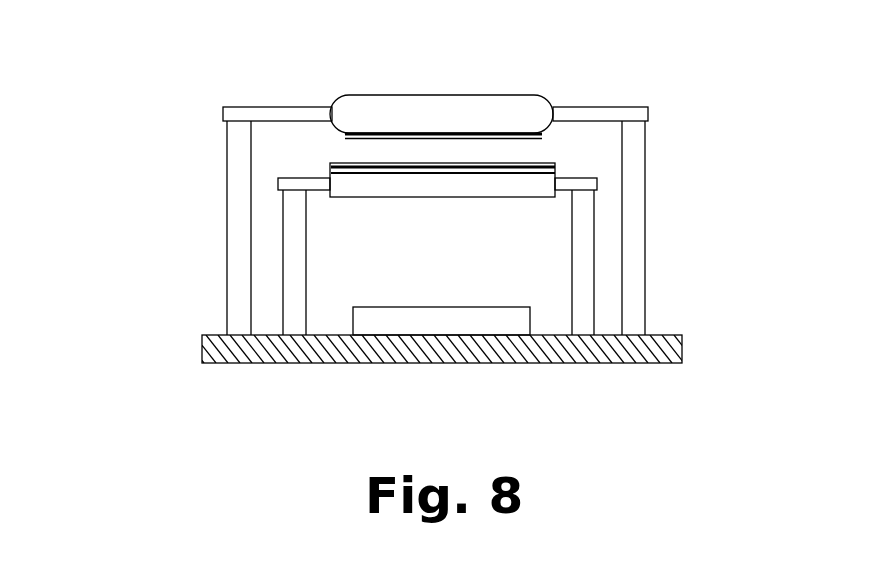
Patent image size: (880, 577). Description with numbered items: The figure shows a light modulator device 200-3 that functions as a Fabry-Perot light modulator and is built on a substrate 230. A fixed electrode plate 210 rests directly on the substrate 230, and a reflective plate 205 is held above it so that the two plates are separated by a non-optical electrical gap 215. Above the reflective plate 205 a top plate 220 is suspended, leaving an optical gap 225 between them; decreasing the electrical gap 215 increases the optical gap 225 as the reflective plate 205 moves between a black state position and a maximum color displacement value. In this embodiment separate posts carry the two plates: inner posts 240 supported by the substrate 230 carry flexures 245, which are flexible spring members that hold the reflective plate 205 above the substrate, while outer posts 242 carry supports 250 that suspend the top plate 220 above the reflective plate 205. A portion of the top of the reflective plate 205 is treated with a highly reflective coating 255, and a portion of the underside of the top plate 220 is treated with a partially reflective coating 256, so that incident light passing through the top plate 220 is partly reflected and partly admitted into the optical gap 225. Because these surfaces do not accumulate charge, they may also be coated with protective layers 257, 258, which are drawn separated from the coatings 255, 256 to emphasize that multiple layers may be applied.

The light modulator device 200-3 is at (162, 90).
The reflective plate 205 is at (463, 195).
The fixed electrode plate 210 is at (461, 333).
The electrical gap 215 is at (520, 270).
The top plate 220 is at (461, 124).
The optical gap 225 is at (547, 151).
The substrate 230 is at (435, 340).
The inner posts 240 is at (283, 288).
The outer posts 242 is at (228, 230).
The flexures 245 is at (326, 190).
The supports 250 is at (297, 107).
The highly reflective coating 255 is at (492, 175).
The partially reflective coating 256 is at (483, 136).
The protective layer 257 is at (375, 169).
The protective layer 258 is at (361, 133).